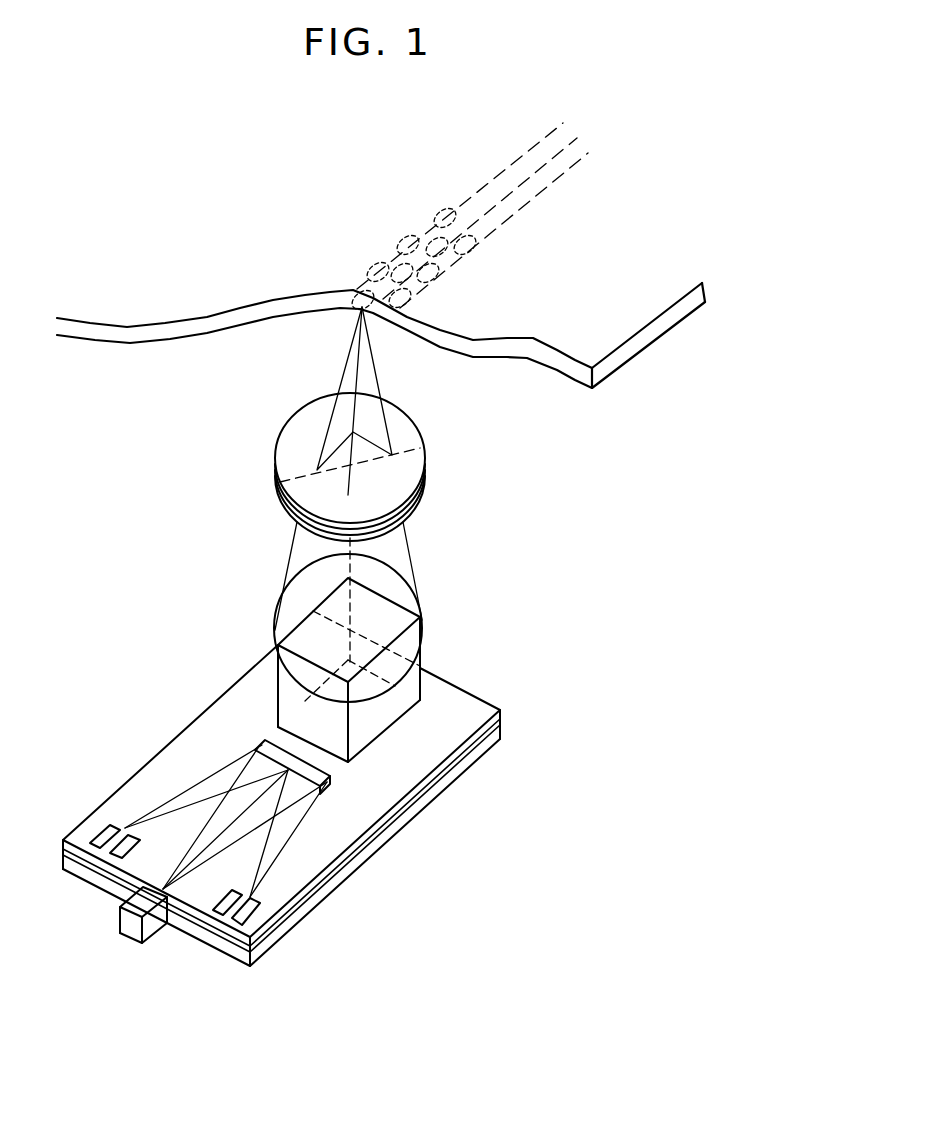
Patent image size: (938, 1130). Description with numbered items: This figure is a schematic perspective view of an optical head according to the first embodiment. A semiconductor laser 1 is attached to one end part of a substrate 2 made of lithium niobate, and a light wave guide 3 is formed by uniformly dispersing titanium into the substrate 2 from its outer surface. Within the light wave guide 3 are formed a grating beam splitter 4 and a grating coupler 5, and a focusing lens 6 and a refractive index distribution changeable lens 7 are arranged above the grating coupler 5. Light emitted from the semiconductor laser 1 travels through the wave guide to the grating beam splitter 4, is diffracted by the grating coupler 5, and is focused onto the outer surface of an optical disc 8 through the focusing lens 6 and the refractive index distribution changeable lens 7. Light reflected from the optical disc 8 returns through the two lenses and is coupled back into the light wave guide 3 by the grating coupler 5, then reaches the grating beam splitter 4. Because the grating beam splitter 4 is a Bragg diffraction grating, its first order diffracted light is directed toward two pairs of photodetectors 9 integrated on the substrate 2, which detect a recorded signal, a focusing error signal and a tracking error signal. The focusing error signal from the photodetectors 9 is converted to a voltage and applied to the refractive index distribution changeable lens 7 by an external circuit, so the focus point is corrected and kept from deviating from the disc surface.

The semiconductor laser 1 is at (128, 937).
The substrate 2 is at (281, 805).
The light wave guide 3 is at (407, 803).
The grating beam splitter 4 is at (327, 778).
The grating coupler 5 is at (388, 725).
The focusing lens 6 is at (280, 612).
The refractive index distribution changeable lens 7 is at (287, 438).
The optical disc 8 is at (103, 333).
The photodetectors 9 is at (80, 867).